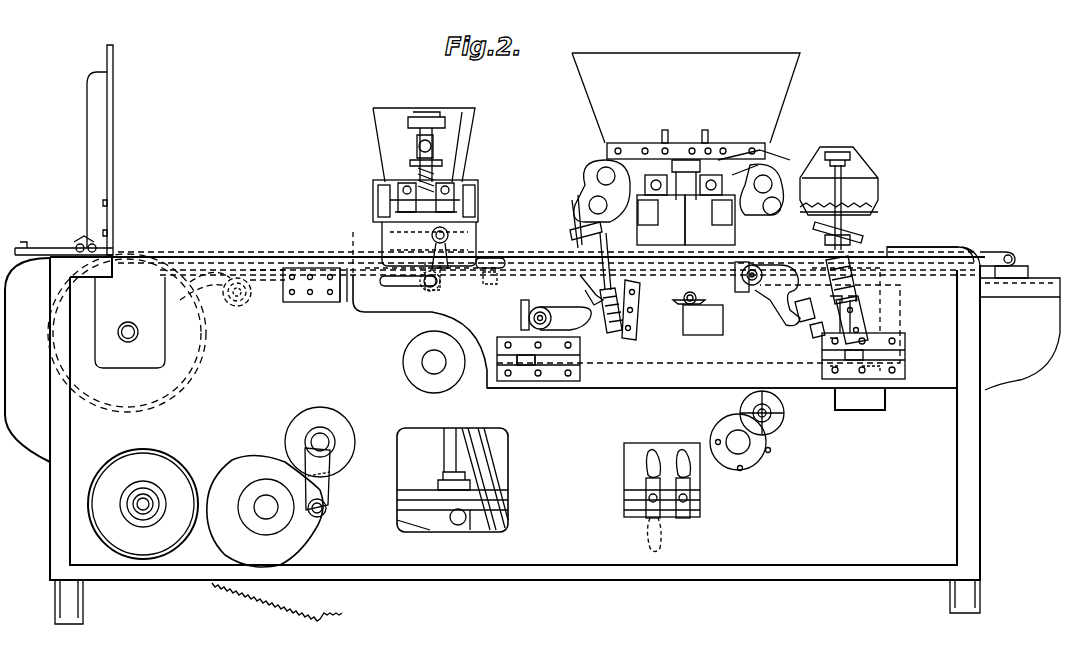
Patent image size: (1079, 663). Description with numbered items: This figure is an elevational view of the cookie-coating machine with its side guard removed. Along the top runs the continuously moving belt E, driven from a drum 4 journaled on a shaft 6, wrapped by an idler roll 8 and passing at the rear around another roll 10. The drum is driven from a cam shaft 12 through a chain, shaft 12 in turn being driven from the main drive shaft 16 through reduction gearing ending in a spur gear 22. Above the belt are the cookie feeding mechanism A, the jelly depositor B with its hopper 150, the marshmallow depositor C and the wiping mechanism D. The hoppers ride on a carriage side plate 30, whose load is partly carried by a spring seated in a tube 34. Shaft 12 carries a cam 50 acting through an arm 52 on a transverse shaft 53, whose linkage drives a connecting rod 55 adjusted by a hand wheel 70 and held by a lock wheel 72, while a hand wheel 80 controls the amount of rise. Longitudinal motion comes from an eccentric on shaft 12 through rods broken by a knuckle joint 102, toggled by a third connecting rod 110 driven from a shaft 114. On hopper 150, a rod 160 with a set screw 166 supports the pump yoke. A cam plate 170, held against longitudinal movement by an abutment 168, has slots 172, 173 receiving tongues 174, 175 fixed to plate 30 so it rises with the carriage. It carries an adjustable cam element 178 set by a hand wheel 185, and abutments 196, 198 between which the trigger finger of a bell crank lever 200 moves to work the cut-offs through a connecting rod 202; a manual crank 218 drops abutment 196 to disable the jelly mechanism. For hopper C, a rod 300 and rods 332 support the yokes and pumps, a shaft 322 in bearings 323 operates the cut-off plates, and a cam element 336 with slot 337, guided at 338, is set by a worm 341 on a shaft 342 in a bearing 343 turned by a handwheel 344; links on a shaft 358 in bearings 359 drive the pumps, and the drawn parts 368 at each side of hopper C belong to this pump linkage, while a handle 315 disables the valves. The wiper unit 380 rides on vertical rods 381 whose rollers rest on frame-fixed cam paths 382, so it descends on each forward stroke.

The cookie stack and feeding mechanism A is at (84, 86).
The first depositor B is at (393, 105).
The second depositor C is at (683, 52).
The wiping mechanism D is at (845, 145).
The belt E is at (966, 252).
The drum 4 is at (195, 300).
The shaft 6 is at (128, 324).
The idler roll 8 is at (240, 305).
The roll 10 is at (1010, 256).
The shaft 12 is at (268, 520).
The main drive shaft 16 is at (148, 496).
The spur gear 22 is at (310, 592).
The side plate 30 is at (382, 313).
The tube 34 is at (490, 445).
The cam 50 is at (242, 475).
The arm 52 is at (332, 484).
The shaft 53 is at (328, 435).
The connecting rod 55 is at (492, 492).
The hand wheel 70 is at (653, 455).
The lock wheel 72 is at (683, 455).
The hand wheel 80 is at (782, 420).
The knuckle joint 102 is at (428, 522).
The third connecting rod 110 is at (445, 440).
The shaft 114 is at (438, 372).
The hopper 150 is at (463, 128).
The rod 160 is at (423, 115).
The set screw 166 is at (420, 147).
The abutment 168 is at (343, 300).
The cam plate 170 is at (638, 375).
The slot 172 is at (582, 360).
The slot 173 is at (905, 358).
The tongue 174 is at (528, 362).
The tongue 175 is at (860, 352).
The adjustable cam element 178 is at (555, 300).
The hand wheel 185 is at (578, 205).
The abutment 196 is at (428, 250).
The abutment 198 is at (497, 258).
The bell crank lever 200 is at (455, 255).
The connecting rod 202 is at (470, 204).
The manual crank 218 is at (400, 282).
The rod 300 is at (687, 143).
The operating handle 315 is at (685, 300).
The shaft 322 is at (714, 215).
The bearings 323 is at (648, 215).
The rods 332 is at (662, 135).
The cam element 336 is at (773, 308).
The slot 337 is at (768, 295).
The tongue and groove arrangement 338 is at (806, 328).
The worm 341 is at (845, 300).
The shaft 342 is at (812, 342).
The bearing 343 is at (842, 280).
The handwheel 344 is at (862, 232).
The shaft 358 is at (760, 172).
The bearings 359 is at (753, 165).
The rocker 368 is at (590, 185).
The vertically reciprocable unit 380 is at (862, 170).
The vertical rods 381 is at (878, 190).
The cam paths 382 is at (868, 403).